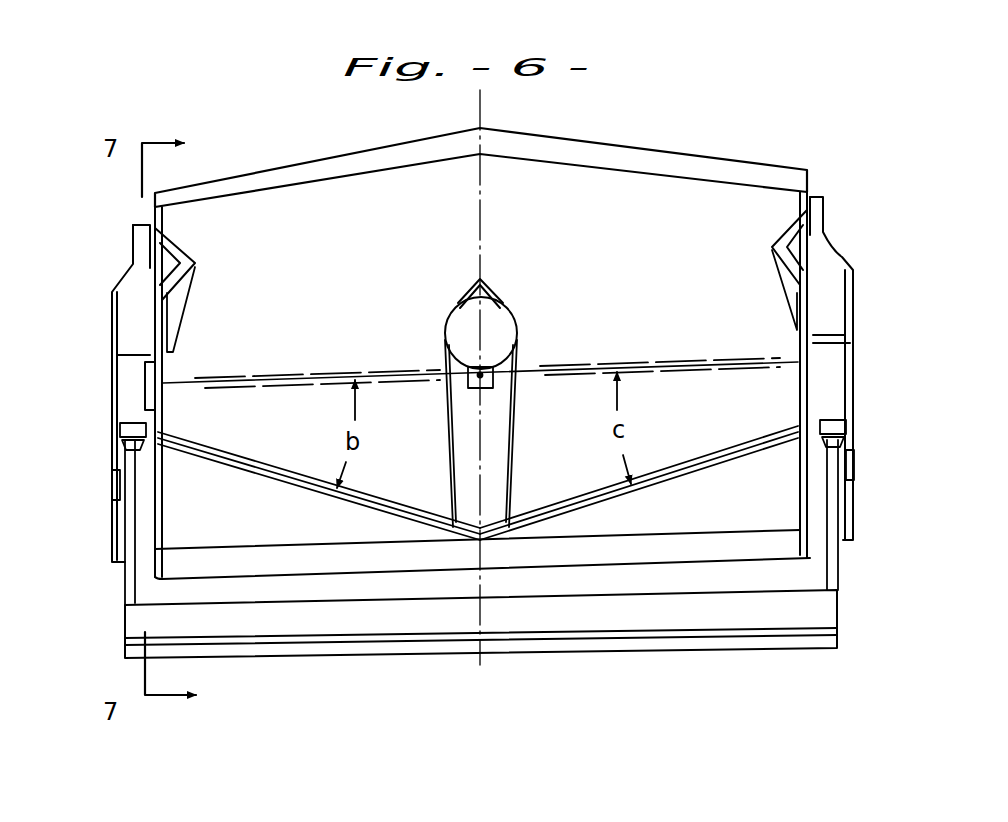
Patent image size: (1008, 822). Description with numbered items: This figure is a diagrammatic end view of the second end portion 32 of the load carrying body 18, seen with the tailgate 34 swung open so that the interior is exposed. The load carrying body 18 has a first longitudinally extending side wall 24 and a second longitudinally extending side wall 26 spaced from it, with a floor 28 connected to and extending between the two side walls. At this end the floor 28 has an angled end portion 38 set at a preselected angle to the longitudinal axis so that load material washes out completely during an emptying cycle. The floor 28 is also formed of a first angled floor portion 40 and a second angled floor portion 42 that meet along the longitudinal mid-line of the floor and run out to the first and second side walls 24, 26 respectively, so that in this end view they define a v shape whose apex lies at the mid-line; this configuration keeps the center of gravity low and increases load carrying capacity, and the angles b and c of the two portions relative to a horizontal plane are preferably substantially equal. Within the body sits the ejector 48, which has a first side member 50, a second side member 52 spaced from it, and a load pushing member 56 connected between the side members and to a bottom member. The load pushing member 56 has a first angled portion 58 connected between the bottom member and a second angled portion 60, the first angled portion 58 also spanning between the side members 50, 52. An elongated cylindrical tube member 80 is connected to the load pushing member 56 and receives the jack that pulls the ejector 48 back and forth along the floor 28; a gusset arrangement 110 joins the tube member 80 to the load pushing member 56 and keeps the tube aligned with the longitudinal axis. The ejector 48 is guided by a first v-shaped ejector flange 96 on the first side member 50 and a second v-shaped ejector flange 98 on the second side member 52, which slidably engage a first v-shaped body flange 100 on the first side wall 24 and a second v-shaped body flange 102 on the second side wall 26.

The load carrying body 18 is at (848, 250).
The first longitudinally extending side wall 24 is at (147, 400).
The second longitudinally extending side wall 26 is at (828, 378).
The floor 28 is at (268, 478).
The second end portion 32 is at (772, 535).
The tailgate 34 is at (815, 612).
The angled end portion 38 is at (262, 528).
The first angled floor portion 40 is at (208, 460).
The second angled floor portion 42 is at (733, 455).
The ejector 48 is at (612, 135).
The first side member 50 is at (163, 320).
The second side member 52 is at (802, 317).
The load pushing member 56 is at (777, 405).
The first angled portion 58 is at (572, 450).
The second angled portion 60 is at (640, 296).
The elongated cylindrical tube member 80 is at (512, 320).
The first v-shaped ejector flange 96 is at (195, 258).
The second v-shaped ejector flange 98 is at (772, 242).
The first v-shaped body flange 100 is at (165, 272).
The second v-shaped body flange 102 is at (833, 240).
The gusset arrangement 110 is at (462, 428).